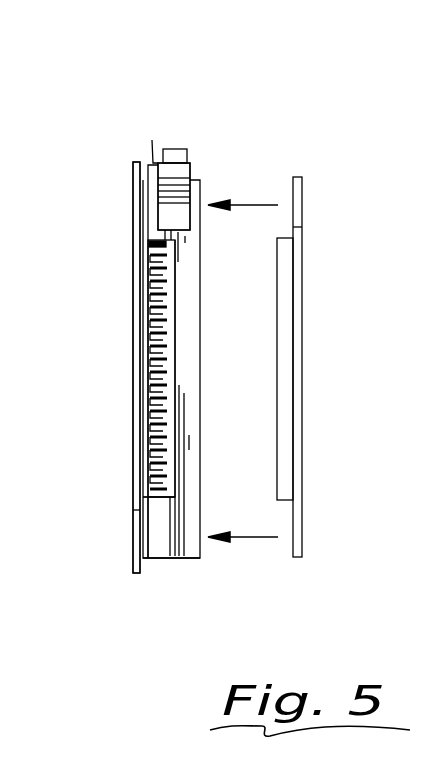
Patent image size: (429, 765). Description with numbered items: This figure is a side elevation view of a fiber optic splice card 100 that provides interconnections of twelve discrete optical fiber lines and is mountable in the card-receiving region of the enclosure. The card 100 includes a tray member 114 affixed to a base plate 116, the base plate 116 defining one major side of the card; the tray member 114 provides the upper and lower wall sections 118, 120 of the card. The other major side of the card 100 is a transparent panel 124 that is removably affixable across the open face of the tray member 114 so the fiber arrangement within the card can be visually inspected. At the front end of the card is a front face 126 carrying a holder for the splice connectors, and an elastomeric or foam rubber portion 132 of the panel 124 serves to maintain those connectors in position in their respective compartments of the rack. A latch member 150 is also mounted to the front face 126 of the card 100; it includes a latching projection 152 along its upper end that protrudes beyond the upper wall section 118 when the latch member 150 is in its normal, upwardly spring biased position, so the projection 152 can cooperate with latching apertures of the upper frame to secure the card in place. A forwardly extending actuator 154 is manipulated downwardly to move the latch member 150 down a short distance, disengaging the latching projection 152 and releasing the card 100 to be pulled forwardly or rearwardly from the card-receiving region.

The fiber optic splice card 100 is at (143, 130).
The tray member 114 is at (205, 185).
The base plate 116 is at (133, 170).
The upper wall section 118 is at (152, 140).
The lower wall section 120 is at (175, 558).
The transparent panel 124 is at (303, 222).
The front face 126 is at (158, 515).
The elastomeric or foam rubber portion 132 is at (288, 410).
The latch member 150 is at (160, 232).
The latching projection 152 is at (187, 150).
The actuator 154 is at (160, 191).